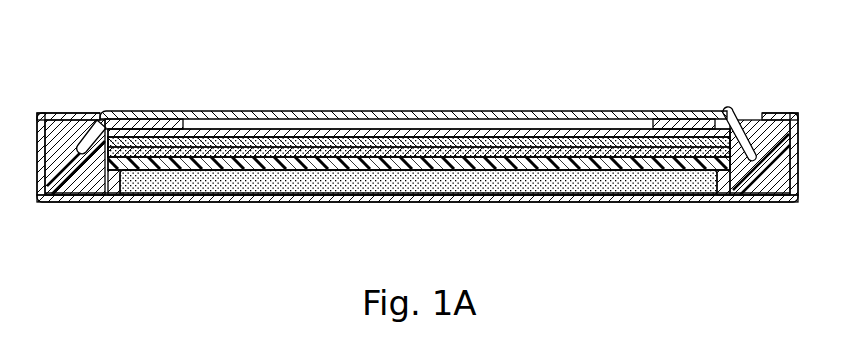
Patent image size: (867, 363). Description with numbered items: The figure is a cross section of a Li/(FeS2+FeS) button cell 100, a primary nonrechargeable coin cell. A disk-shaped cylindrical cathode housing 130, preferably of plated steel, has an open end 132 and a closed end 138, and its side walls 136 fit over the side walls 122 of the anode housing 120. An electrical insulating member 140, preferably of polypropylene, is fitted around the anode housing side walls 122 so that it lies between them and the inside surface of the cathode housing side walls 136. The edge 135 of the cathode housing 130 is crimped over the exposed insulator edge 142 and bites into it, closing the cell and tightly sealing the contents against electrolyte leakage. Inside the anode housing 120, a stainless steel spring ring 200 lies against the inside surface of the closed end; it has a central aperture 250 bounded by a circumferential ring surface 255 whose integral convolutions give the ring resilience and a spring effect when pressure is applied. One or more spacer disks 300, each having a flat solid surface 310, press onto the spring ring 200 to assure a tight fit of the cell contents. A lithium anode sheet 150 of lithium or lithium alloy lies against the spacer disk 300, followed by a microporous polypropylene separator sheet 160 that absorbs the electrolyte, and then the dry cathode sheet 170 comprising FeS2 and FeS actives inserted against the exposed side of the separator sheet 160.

The button cell 100 is at (563, 53).
The anode housing 120 is at (177, 112).
The side walls of anode housing 122 is at (758, 134).
The cathode housing 130 is at (645, 203).
The open end 132 is at (755, 115).
The edge of cathode housing 135 is at (60, 113).
The side walls of cathode housing 136 is at (800, 178).
The closed end 138 is at (355, 203).
The electrical insulating member 140 is at (70, 187).
The insulator edge 142 is at (77, 123).
The lithium anode sheet 150 is at (402, 130).
The separator sheet 160 is at (222, 167).
The cathode sheet 170 is at (542, 185).
The spring ring 200 is at (708, 112).
The central aperture 250 is at (245, 128).
The circumferential ring surface 255 is at (662, 122).
The spacer disk 300 is at (325, 135).
The flat solid surface 310 is at (472, 130).